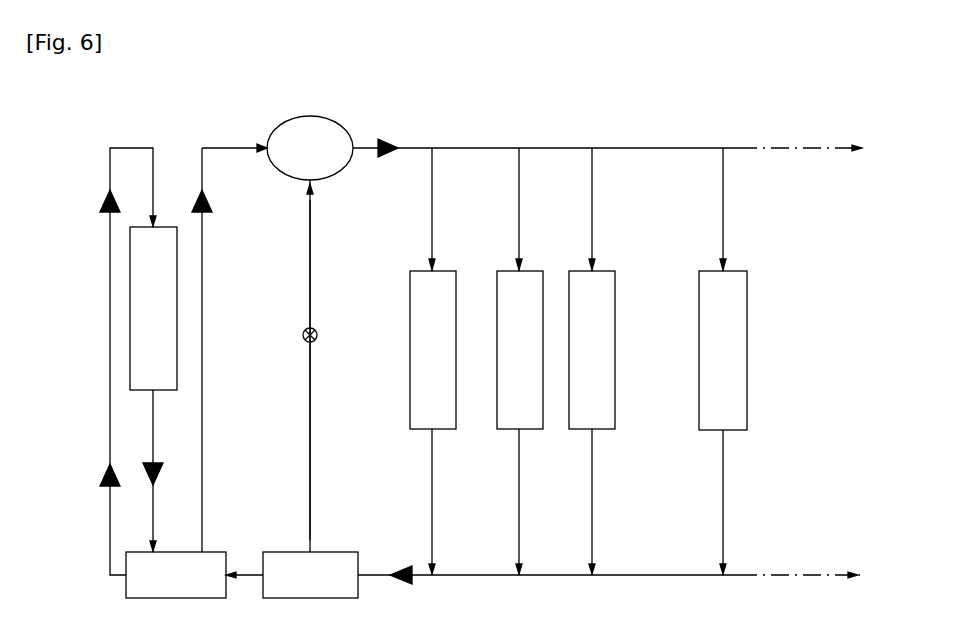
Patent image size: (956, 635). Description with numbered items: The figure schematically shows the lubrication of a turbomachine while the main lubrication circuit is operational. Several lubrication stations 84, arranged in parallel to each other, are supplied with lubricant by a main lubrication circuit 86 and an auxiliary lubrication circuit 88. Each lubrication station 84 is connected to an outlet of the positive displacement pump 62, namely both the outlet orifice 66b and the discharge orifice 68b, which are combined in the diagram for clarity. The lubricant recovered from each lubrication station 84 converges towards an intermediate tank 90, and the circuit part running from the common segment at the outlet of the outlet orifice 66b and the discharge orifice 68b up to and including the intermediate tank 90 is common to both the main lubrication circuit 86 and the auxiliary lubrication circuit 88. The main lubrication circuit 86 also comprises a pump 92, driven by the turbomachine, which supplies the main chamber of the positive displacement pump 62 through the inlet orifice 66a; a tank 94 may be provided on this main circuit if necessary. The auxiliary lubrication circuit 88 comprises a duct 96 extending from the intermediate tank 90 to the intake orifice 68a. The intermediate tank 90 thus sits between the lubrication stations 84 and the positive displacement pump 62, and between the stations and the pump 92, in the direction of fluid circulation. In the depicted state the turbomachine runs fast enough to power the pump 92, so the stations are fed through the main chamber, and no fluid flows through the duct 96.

The positive displacement pump 62 is at (312, 130).
The inlet orifice 66a is at (267, 146).
The outlet orifice 66b is at (353, 144).
The discharge orifice 68b is at (812, 148).
The intake orifice 68a is at (318, 180).
The lubrication station 84 is at (421, 430).
The main lubrication circuit 86 is at (290, 376).
The auxiliary lubrication circuit 88 is at (72, 426).
The intermediate tank 90 is at (310, 575).
The pump 92 is at (194, 575).
The tank 94 is at (153, 308).
The duct 96 is at (310, 350).